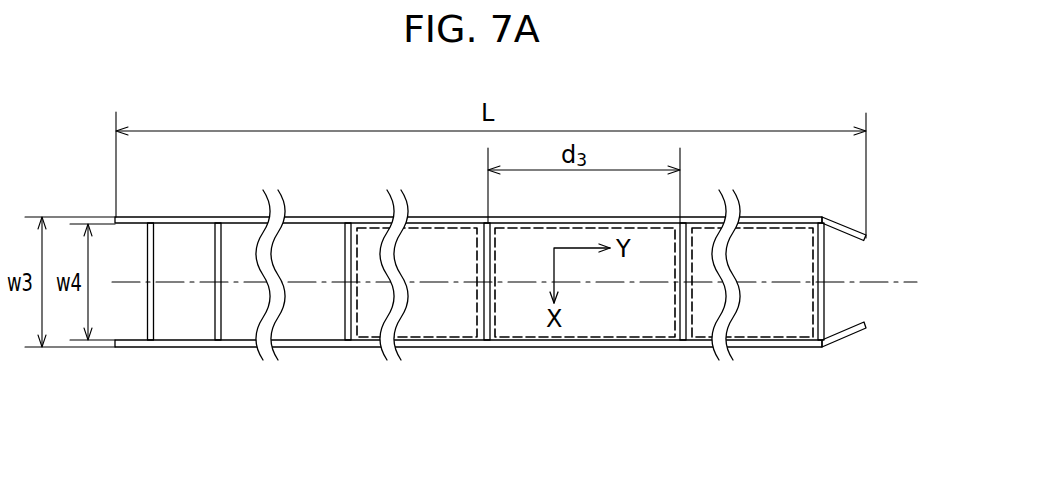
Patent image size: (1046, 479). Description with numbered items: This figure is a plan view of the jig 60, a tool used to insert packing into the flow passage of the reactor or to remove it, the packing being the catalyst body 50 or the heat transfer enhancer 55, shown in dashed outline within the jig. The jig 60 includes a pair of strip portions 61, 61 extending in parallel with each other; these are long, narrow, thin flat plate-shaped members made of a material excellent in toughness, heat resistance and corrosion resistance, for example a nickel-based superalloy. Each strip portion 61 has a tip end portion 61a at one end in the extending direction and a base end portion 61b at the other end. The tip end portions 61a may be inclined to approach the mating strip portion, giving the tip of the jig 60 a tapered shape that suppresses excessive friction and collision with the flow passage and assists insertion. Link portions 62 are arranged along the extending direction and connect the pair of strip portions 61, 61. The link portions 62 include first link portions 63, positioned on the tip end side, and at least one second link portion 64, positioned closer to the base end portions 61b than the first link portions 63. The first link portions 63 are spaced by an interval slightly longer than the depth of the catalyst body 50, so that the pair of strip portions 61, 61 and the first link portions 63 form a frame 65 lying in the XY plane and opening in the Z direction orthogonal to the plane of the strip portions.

The jig 60 is at (504, 246).
The strip portion 61 is at (490, 284).
The tip end portion 61a is at (840, 332).
The base end portion 61b is at (125, 337).
The link portion 62 is at (521, 321).
The first link portion 63 is at (633, 406).
The second link portion 64 is at (223, 332).
The catalyst body 50 is at (585, 242).
The heat transfer enhancer 55 is at (529, 228).
The frame 65 is at (688, 350).